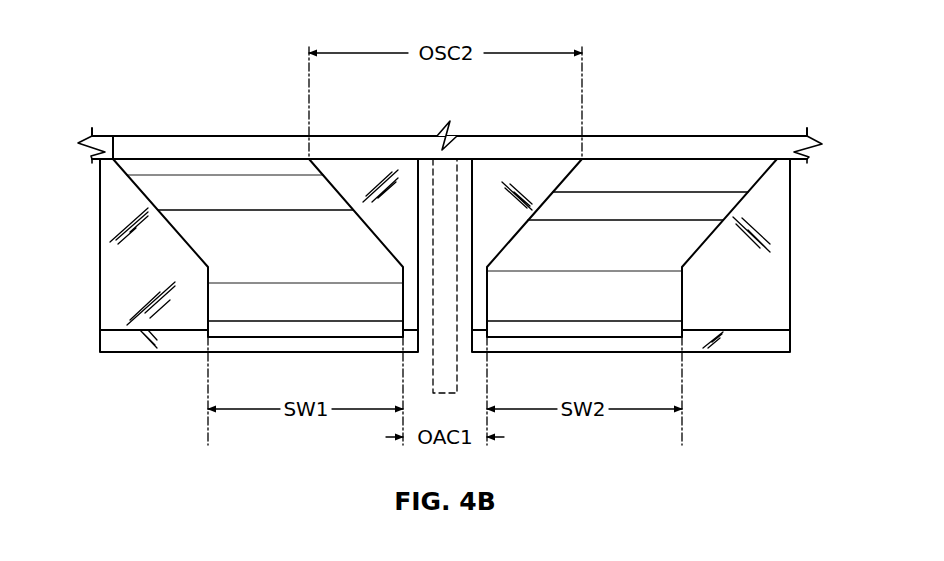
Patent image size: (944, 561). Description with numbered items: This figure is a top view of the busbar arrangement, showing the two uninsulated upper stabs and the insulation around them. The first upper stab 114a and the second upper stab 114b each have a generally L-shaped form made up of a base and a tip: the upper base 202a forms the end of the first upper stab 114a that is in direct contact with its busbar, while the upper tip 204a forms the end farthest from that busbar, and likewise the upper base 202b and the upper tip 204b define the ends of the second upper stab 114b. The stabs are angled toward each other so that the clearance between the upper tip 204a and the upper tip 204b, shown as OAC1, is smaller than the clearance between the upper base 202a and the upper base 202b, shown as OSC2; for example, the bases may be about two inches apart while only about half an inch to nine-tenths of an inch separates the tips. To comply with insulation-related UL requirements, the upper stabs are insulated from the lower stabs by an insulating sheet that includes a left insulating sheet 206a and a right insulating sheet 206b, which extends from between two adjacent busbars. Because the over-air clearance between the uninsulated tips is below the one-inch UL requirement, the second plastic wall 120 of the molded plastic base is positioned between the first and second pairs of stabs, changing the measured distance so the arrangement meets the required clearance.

The L1 stab base 202a is at (143, 136).
The upper base of the second upper stab 202b is at (728, 152).
The first upper stab 114a is at (278, 244).
The second upper stab 114b is at (634, 244).
The second plastic wall 120 is at (443, 200).
The left insulating sheet 206a is at (112, 287).
The right insulating sheet 206b is at (773, 277).
The L1 stab tip 204a is at (258, 338).
The upper tip of the second upper stab 204b is at (635, 338).